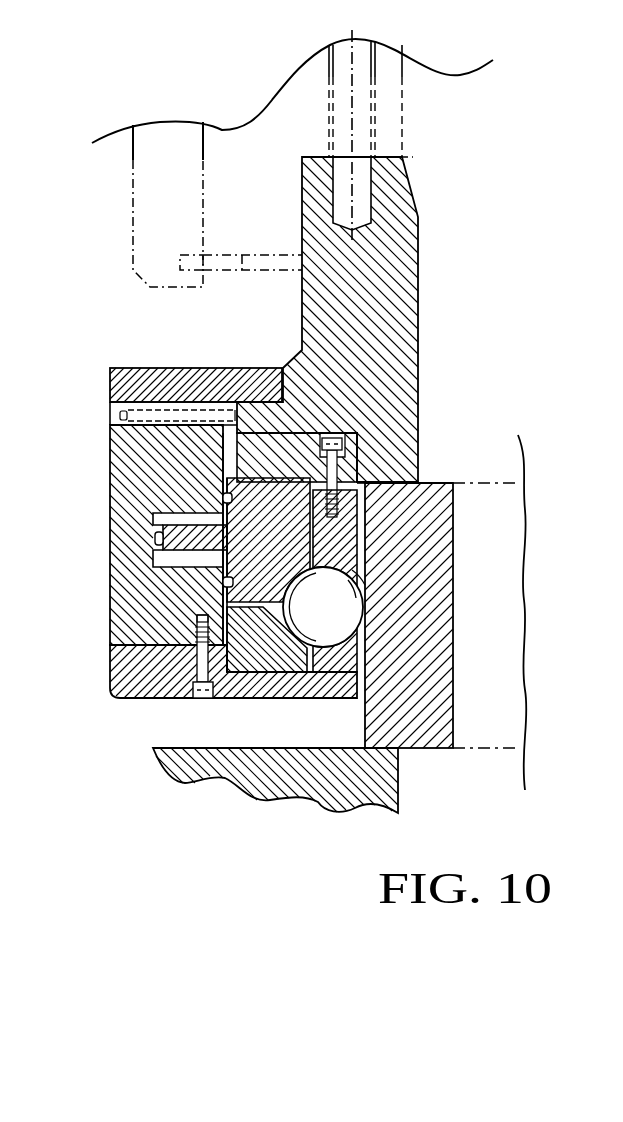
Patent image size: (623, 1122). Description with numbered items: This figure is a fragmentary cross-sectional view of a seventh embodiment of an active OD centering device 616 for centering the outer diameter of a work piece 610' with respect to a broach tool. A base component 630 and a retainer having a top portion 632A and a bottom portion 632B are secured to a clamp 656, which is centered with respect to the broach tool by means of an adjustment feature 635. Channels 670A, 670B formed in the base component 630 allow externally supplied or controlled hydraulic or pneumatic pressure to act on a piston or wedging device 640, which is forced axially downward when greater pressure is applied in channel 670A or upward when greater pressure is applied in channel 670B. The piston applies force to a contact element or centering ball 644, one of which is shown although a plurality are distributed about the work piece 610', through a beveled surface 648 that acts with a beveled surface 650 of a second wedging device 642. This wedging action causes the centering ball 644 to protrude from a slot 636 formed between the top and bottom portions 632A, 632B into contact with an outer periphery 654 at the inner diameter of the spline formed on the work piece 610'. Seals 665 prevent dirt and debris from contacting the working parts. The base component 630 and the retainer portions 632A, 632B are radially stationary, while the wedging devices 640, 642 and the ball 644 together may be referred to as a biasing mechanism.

The clamp 656 is at (400, 333).
The adjustment feature 635 is at (158, 412).
The piston or wedging device 640 is at (278, 508).
The seals 665 is at (222, 500).
The base component 630 is at (120, 468).
The channel 670A is at (145, 493).
The channel 670B is at (183, 567).
The top portion of retainer 632A is at (127, 670).
The bottom portion of retainer 632B is at (380, 527).
The slot 636 is at (365, 590).
The beveled surface 648 is at (293, 598).
The beveled surface 650 is at (300, 625).
The work piece 610' is at (488, 615).
The active OD centering device 616 is at (185, 712).
The wedging device 642 is at (253, 653).
The contact element or centering ball 644 is at (322, 640).
The outer periphery 654 is at (358, 710).